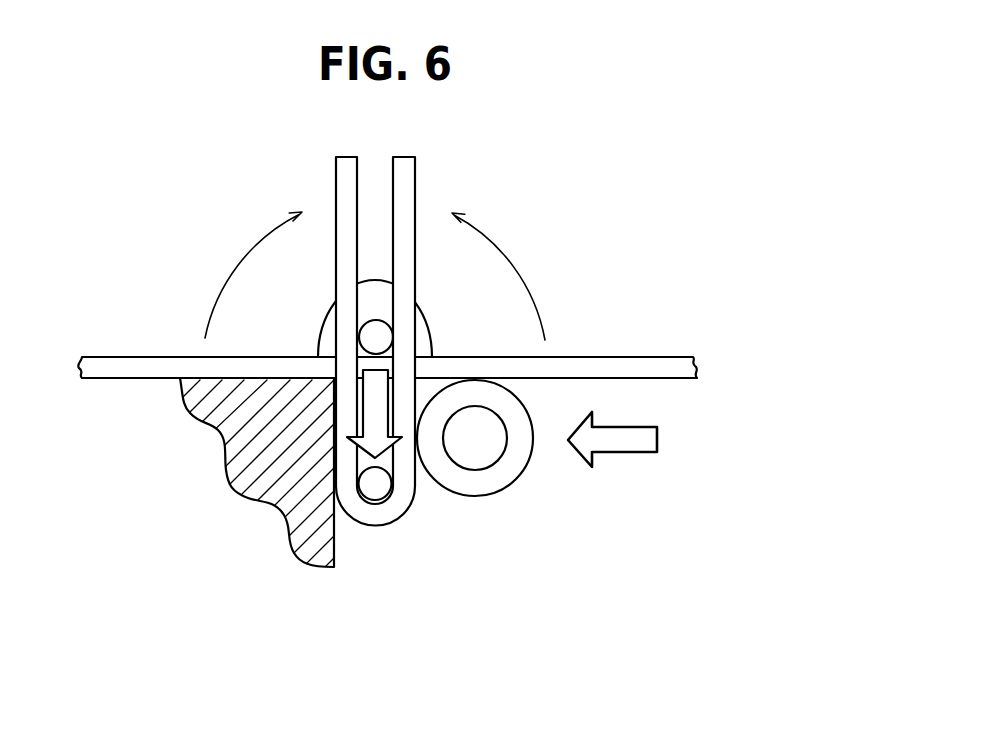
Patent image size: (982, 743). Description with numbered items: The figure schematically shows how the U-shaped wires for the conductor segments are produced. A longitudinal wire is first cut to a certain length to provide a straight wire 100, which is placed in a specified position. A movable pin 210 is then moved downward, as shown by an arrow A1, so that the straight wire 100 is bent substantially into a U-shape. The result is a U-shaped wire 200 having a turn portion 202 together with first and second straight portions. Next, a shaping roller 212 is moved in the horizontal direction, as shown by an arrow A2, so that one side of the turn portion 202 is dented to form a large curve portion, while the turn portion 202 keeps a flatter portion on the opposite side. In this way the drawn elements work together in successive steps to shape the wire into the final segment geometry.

The straight wire 100 is at (612, 358).
The U-shaped wire 200 is at (410, 172).
The turn portion 202 is at (373, 515).
The movable pin 210 is at (380, 335).
The shaping roller 212 is at (497, 482).
The arrow A1 is at (378, 445).
The arrow A2 is at (640, 442).